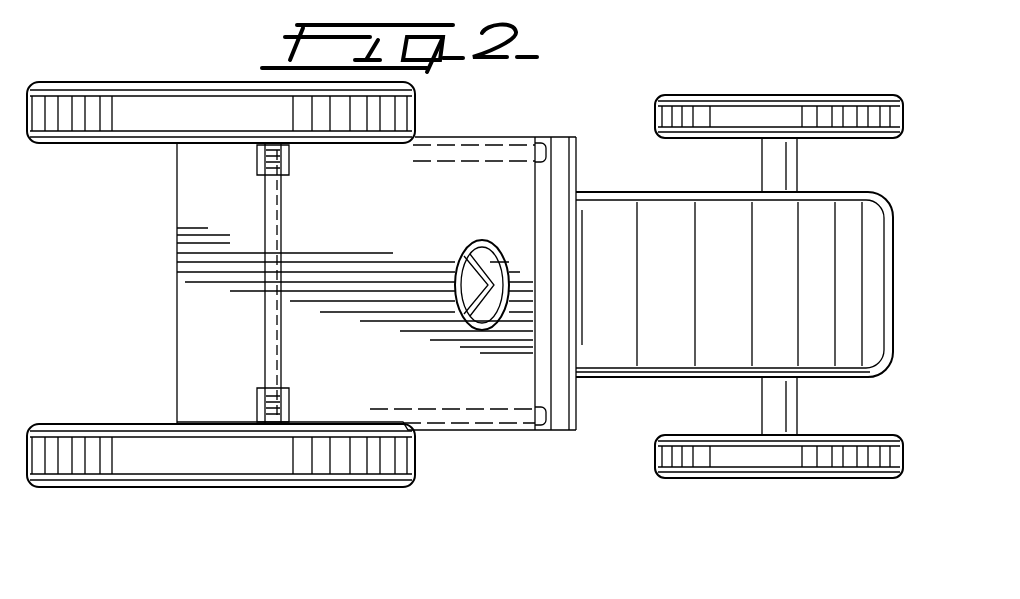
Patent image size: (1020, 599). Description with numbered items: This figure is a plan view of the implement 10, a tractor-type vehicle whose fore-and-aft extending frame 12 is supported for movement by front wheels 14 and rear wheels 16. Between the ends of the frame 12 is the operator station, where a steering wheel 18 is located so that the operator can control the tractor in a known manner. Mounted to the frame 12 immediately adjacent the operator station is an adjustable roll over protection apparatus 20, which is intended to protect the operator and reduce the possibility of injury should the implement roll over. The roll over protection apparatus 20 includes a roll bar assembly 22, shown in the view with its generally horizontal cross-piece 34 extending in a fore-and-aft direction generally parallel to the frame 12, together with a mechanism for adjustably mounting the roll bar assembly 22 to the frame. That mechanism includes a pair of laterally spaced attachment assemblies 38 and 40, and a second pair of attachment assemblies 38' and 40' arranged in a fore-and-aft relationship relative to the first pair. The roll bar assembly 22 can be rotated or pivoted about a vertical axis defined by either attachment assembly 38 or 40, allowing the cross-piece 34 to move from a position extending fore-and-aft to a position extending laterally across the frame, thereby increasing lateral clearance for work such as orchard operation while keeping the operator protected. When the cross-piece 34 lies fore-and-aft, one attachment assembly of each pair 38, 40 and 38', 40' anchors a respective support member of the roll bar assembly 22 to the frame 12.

The implement 10 is at (761, 90).
The frame 12 is at (652, 354).
The front wheels 14 is at (687, 122).
The rear wheels 16 is at (103, 125).
The steering wheel 18 is at (462, 258).
The roll over protection apparatus 20 is at (263, 324).
The roll bar assembly 22 is at (286, 347).
The cross-piece 34 is at (276, 222).
The attachment assembly 38 is at (296, 176).
The attachment assembly 40 is at (297, 396).
The attachment assembly 38' is at (497, 122).
The attachment assembly 40' is at (464, 446).